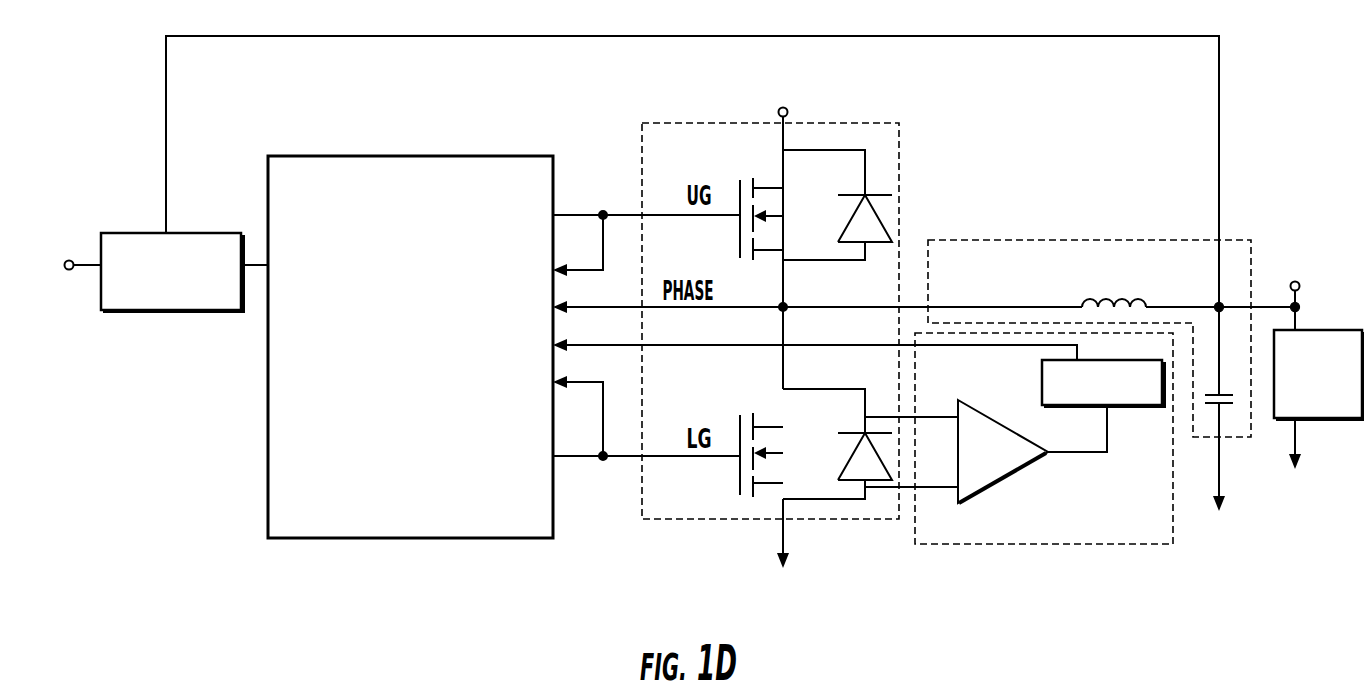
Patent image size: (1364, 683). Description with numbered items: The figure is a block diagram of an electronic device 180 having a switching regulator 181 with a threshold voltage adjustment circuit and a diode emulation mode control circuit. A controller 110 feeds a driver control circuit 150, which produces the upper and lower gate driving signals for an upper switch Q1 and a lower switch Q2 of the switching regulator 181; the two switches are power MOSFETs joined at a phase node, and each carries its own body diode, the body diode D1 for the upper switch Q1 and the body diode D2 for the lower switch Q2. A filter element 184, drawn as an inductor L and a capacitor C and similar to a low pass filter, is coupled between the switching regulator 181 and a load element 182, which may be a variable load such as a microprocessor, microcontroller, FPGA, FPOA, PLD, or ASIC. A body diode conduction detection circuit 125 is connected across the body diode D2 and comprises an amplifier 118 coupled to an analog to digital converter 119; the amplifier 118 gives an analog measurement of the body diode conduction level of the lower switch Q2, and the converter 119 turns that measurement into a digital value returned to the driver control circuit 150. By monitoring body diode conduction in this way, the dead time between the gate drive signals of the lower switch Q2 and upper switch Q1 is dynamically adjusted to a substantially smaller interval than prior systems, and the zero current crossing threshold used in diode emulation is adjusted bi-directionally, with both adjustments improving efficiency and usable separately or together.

The controller 110 is at (155, 297).
The driver control circuit 150 is at (402, 363).
The electronic device 180 is at (234, 578).
The switching regulator 181 is at (737, 123).
The filter element 184 is at (945, 240).
The load element 182 is at (1302, 411).
The body diode conduction detection circuit 125 is at (1051, 470).
The amplifier 118 is at (973, 465).
The analog to digital converter 119 is at (1103, 406).
The upper switch Q1 is at (833, 150).
The lower switch Q2 is at (825, 499).
The body diode of Q1 D1 is at (873, 193).
The body diode D2 is at (865, 456).
The inductor L is at (1188, 291).
The capacitor C is at (1221, 409).